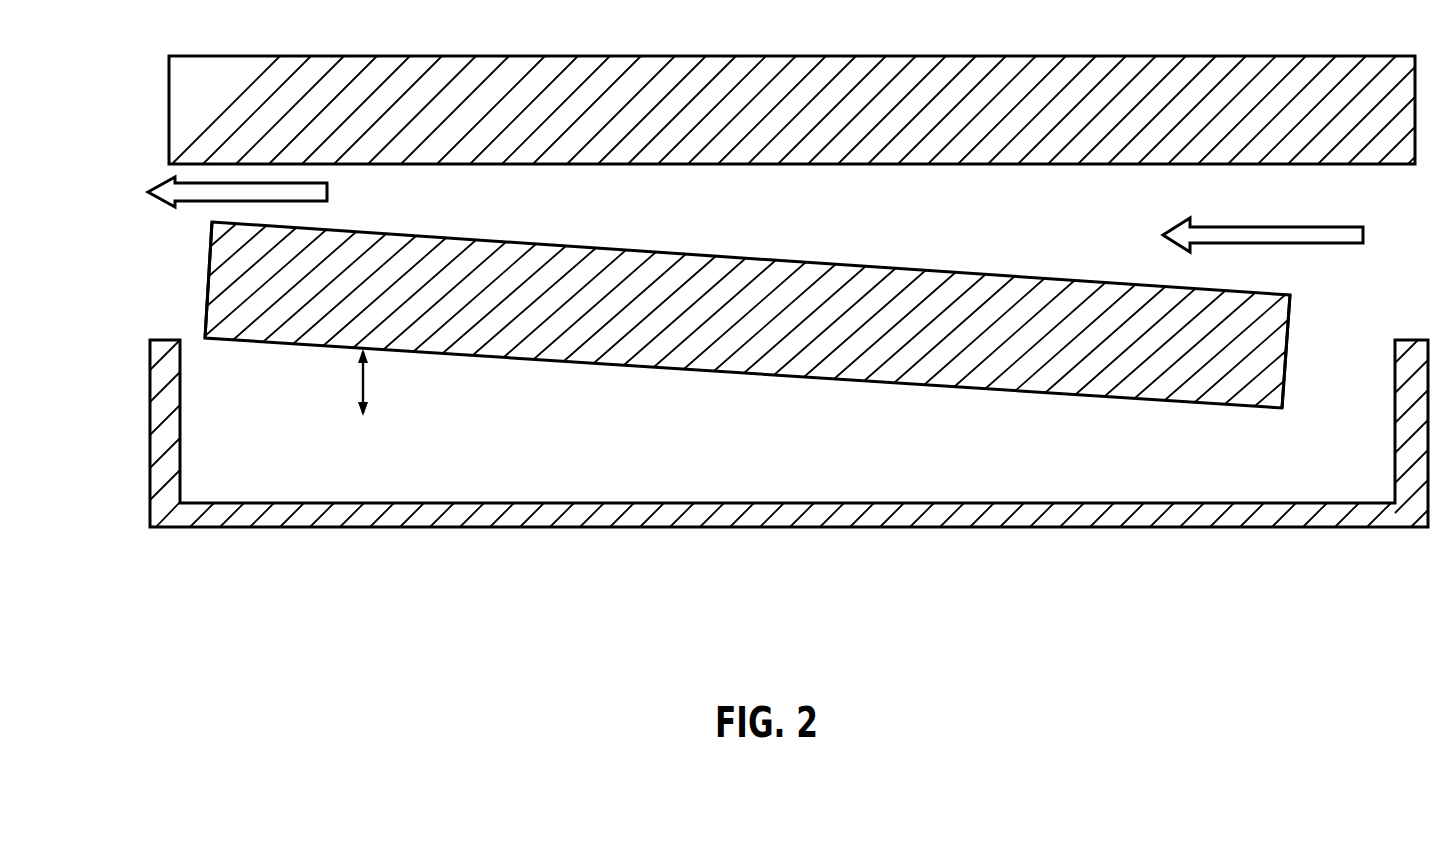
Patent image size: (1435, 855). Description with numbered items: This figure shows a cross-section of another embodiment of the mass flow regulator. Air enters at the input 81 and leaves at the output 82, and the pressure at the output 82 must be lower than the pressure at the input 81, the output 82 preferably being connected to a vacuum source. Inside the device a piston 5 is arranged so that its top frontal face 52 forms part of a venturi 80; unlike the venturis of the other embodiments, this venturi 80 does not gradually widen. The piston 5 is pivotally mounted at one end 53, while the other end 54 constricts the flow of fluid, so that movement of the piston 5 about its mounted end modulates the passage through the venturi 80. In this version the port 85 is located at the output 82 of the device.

The piston 5 is at (563, 370).
The frontal face 52 is at (855, 267).
The end of piston 53 is at (1223, 365).
The other end of piston 54 is at (272, 318).
The venturi 80 is at (650, 217).
The input 81 is at (1427, 241).
The output 82 is at (150, 240).
The port 85 is at (197, 340).